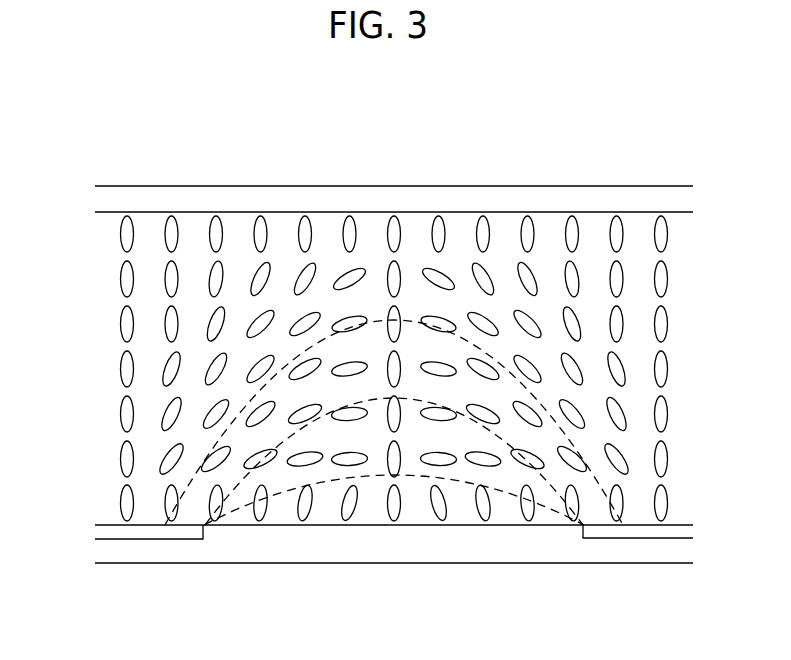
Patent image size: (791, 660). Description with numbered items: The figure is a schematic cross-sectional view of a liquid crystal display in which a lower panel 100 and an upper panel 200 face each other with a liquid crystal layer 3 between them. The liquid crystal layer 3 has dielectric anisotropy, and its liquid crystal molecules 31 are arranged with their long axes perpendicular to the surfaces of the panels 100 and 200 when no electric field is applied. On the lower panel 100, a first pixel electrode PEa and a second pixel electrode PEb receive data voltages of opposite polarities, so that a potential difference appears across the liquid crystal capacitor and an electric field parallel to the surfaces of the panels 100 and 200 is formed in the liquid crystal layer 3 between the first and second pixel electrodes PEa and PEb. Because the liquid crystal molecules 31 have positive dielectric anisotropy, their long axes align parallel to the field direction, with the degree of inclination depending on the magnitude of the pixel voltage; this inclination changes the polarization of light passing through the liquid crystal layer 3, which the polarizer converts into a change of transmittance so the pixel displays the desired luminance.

The upper panel 200 is at (82, 186).
The lower panel 100 is at (82, 526).
The liquid crystal layer 3 is at (82, 214).
The liquid crystal molecules 31 is at (661, 368).
The first pixel electrode PEa is at (150, 534).
The second pixel electrode PEb is at (637, 534).